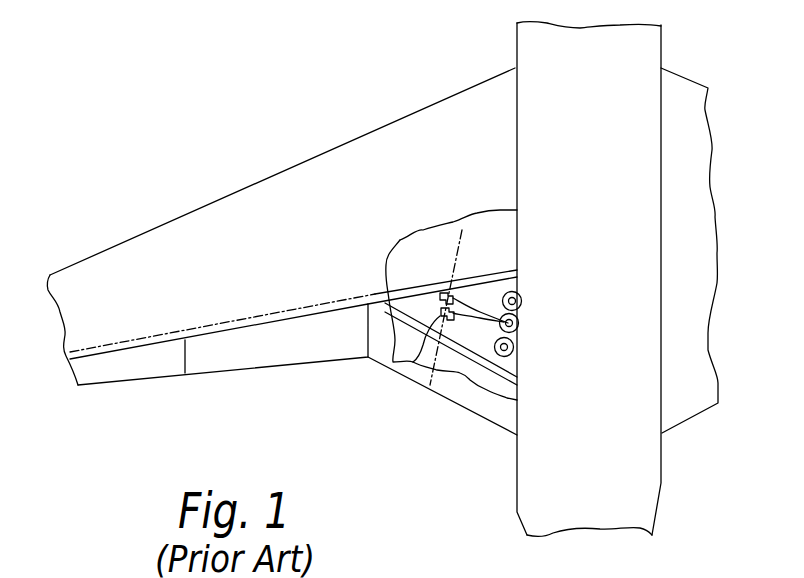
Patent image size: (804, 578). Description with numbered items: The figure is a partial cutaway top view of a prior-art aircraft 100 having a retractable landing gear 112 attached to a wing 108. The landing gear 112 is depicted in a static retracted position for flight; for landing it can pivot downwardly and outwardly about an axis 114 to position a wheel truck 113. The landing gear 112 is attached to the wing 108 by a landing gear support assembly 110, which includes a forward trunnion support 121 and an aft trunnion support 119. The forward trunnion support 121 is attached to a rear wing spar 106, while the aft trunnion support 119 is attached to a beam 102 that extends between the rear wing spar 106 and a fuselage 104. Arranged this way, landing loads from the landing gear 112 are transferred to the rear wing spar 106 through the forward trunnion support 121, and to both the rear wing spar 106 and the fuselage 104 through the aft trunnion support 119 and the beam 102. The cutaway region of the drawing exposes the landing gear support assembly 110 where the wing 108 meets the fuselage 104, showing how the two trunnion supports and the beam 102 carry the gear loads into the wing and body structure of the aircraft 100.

The aircraft 100 is at (250, 92).
The beam 102 is at (477, 360).
The fuselage 104 is at (517, 500).
The rear wing spar 106 is at (468, 290).
The wing 108 is at (168, 222).
The landing gear support assembly 110 is at (416, 276).
The retractable landing gear 112 is at (483, 292).
The wheel truck 113 is at (518, 323).
The axis 114 is at (390, 367).
The aft trunnion support 119 is at (413, 362).
The forward trunnion support 121 is at (440, 292).